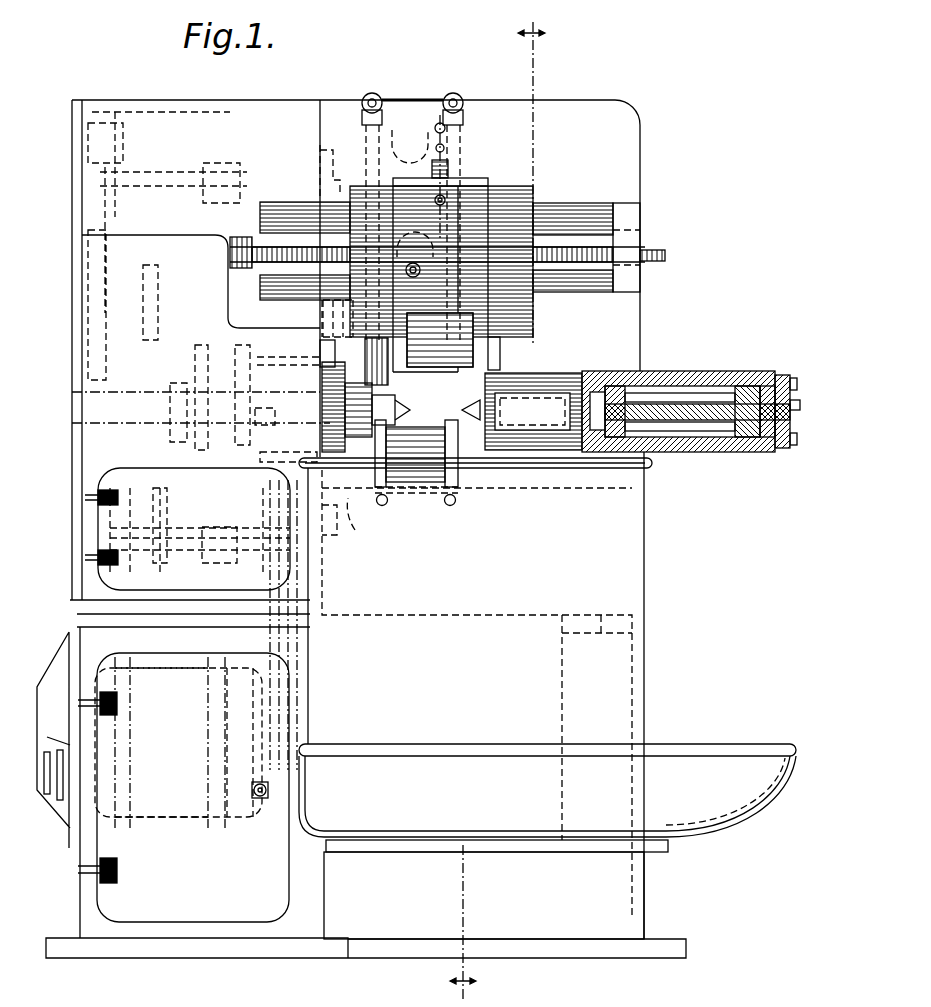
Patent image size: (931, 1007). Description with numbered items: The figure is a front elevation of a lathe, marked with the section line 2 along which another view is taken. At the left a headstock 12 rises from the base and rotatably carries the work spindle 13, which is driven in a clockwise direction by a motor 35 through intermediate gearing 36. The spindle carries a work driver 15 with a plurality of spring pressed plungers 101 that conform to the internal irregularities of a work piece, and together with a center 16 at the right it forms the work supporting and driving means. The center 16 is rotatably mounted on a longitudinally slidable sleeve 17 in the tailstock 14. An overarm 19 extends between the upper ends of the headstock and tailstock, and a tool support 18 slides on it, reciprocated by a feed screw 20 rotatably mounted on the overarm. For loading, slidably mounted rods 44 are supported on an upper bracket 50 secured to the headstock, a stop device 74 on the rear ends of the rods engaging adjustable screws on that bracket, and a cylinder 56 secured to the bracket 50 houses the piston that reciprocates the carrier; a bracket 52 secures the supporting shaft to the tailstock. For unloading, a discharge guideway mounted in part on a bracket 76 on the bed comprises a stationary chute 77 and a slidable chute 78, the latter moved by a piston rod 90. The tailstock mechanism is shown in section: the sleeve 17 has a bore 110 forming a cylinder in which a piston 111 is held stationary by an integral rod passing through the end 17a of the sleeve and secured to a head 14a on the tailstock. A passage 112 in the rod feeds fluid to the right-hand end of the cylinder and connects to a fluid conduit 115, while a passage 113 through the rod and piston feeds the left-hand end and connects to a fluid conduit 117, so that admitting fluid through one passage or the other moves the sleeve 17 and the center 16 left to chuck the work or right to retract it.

The section line 2- 2 is at (505, 514).
The headstock 12 is at (72, 392).
The work spindle 13 is at (267, 418).
The tailstock 14 is at (633, 313).
The head 14a is at (760, 400).
The work driver 15 is at (360, 443).
The center 16 is at (468, 425).
The sleeve 17 is at (677, 370).
The end of the sleeve 17a is at (763, 377).
The tool support 18 is at (520, 210).
The overarm 19 is at (488, 108).
The feed screw 20 is at (563, 242).
The motor 35 is at (178, 673).
The intermediate gearing 36 is at (270, 550).
The rods 44 is at (373, 142).
The upper bracket 50 is at (322, 143).
The bracket 52 is at (497, 350).
The cylinder 56 is at (398, 105).
The stop device 74 is at (415, 105).
The bracket 76 is at (361, 524).
The stationary chute 77 is at (433, 490).
The slidable chute 78 is at (447, 446).
The piston rod 90 is at (455, 506).
The spring pressed plungers 101 is at (400, 407).
The bore 110 is at (643, 370).
The piston 111 is at (618, 393).
The passage 112 is at (728, 385).
The passage 113 is at (693, 420).
The fluid conduit 115 is at (782, 405).
The fluid conduit 117 is at (787, 423).